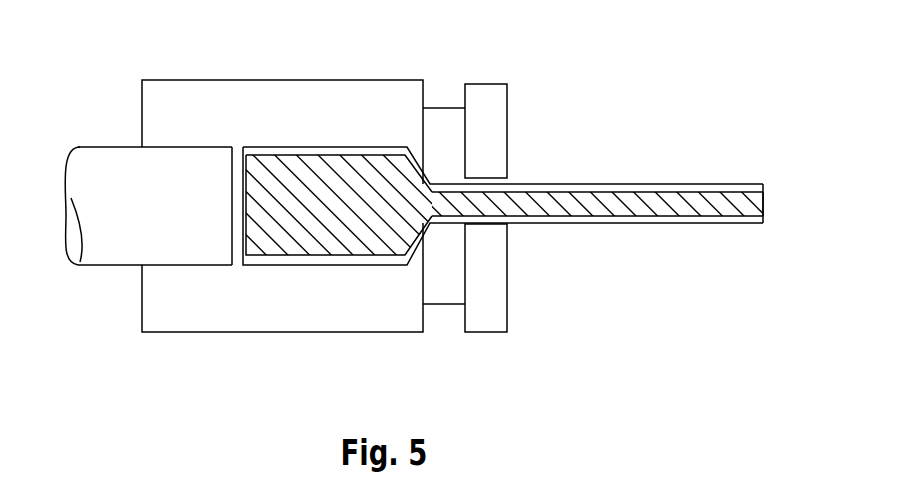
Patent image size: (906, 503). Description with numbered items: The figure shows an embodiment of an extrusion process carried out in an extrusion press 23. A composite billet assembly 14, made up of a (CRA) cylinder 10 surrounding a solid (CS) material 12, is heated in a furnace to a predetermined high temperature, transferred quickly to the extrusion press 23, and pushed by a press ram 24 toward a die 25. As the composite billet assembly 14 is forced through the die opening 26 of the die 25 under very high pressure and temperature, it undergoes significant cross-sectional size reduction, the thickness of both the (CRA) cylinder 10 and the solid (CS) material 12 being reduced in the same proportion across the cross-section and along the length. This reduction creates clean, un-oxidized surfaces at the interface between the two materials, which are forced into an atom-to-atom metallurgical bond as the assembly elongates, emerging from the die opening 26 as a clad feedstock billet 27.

The (CRA) cylinder 10 is at (338, 256).
The solid (CS) material 12 is at (703, 208).
The composite billet assembly 14 is at (350, 137).
The extrusion press 23 is at (192, 92).
The press ram 24 is at (112, 157).
The die 25 is at (449, 276).
The die opening 26 is at (447, 180).
The clad feedstock billet 27 is at (678, 167).